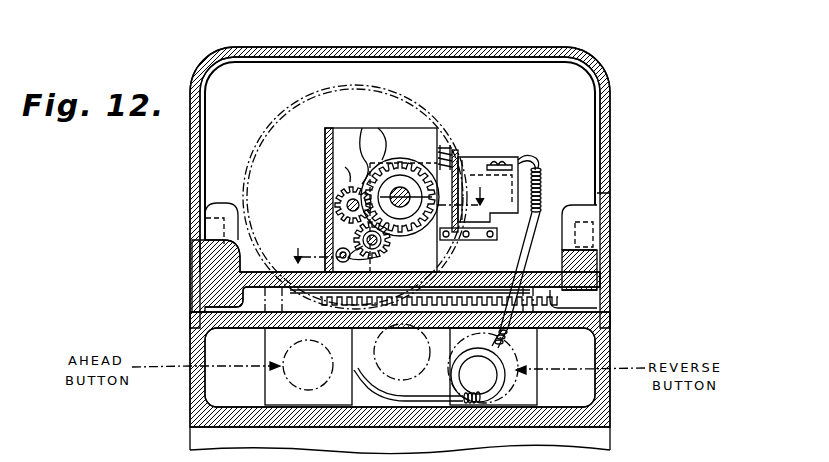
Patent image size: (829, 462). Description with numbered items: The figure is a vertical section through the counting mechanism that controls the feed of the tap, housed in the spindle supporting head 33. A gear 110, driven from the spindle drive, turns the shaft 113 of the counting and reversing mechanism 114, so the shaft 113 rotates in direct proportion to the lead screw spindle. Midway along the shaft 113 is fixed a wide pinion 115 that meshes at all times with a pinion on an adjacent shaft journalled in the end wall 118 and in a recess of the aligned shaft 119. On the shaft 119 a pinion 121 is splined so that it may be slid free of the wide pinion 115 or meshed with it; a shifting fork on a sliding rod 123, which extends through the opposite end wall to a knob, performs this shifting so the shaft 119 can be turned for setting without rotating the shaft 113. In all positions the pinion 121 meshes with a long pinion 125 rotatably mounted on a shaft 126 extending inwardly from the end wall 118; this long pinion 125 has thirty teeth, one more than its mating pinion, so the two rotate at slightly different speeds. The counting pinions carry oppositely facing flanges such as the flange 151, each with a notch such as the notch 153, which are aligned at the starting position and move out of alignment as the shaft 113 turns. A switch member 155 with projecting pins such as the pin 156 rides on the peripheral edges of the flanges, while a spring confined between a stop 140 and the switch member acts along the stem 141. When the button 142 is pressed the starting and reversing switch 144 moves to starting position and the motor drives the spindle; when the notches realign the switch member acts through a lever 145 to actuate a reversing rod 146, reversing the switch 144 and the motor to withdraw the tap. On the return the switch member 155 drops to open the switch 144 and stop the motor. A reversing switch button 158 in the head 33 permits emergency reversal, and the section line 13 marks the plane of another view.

The spindle supporting head 33 is at (399, 47).
The gear 110 is at (284, 120).
The counting and reversing mechanism 114 is at (327, 153).
The end wall 118 is at (347, 167).
The shaft 113 is at (342, 195).
The wide pinion 115 is at (337, 210).
The sliding rod 123 is at (338, 252).
The section line 13 is at (399, 249).
The flange 151 is at (366, 163).
The notch 153 is at (412, 153).
The long pinion 125 is at (378, 130).
The stem 141 is at (441, 148).
The stop 140 is at (452, 145).
The starting and reversing switch 144 is at (468, 152).
The switch member 155 is at (476, 160).
The projecting pin 156 is at (491, 187).
The shaft 126 is at (542, 198).
The reversing rod 146 is at (498, 232).
The lever 145 is at (475, 241).
The shaft 119 is at (390, 241).
The pinion 121 is at (382, 252).
The reversing switch button 158 is at (283, 350).
The starting switch button 142 is at (515, 358).